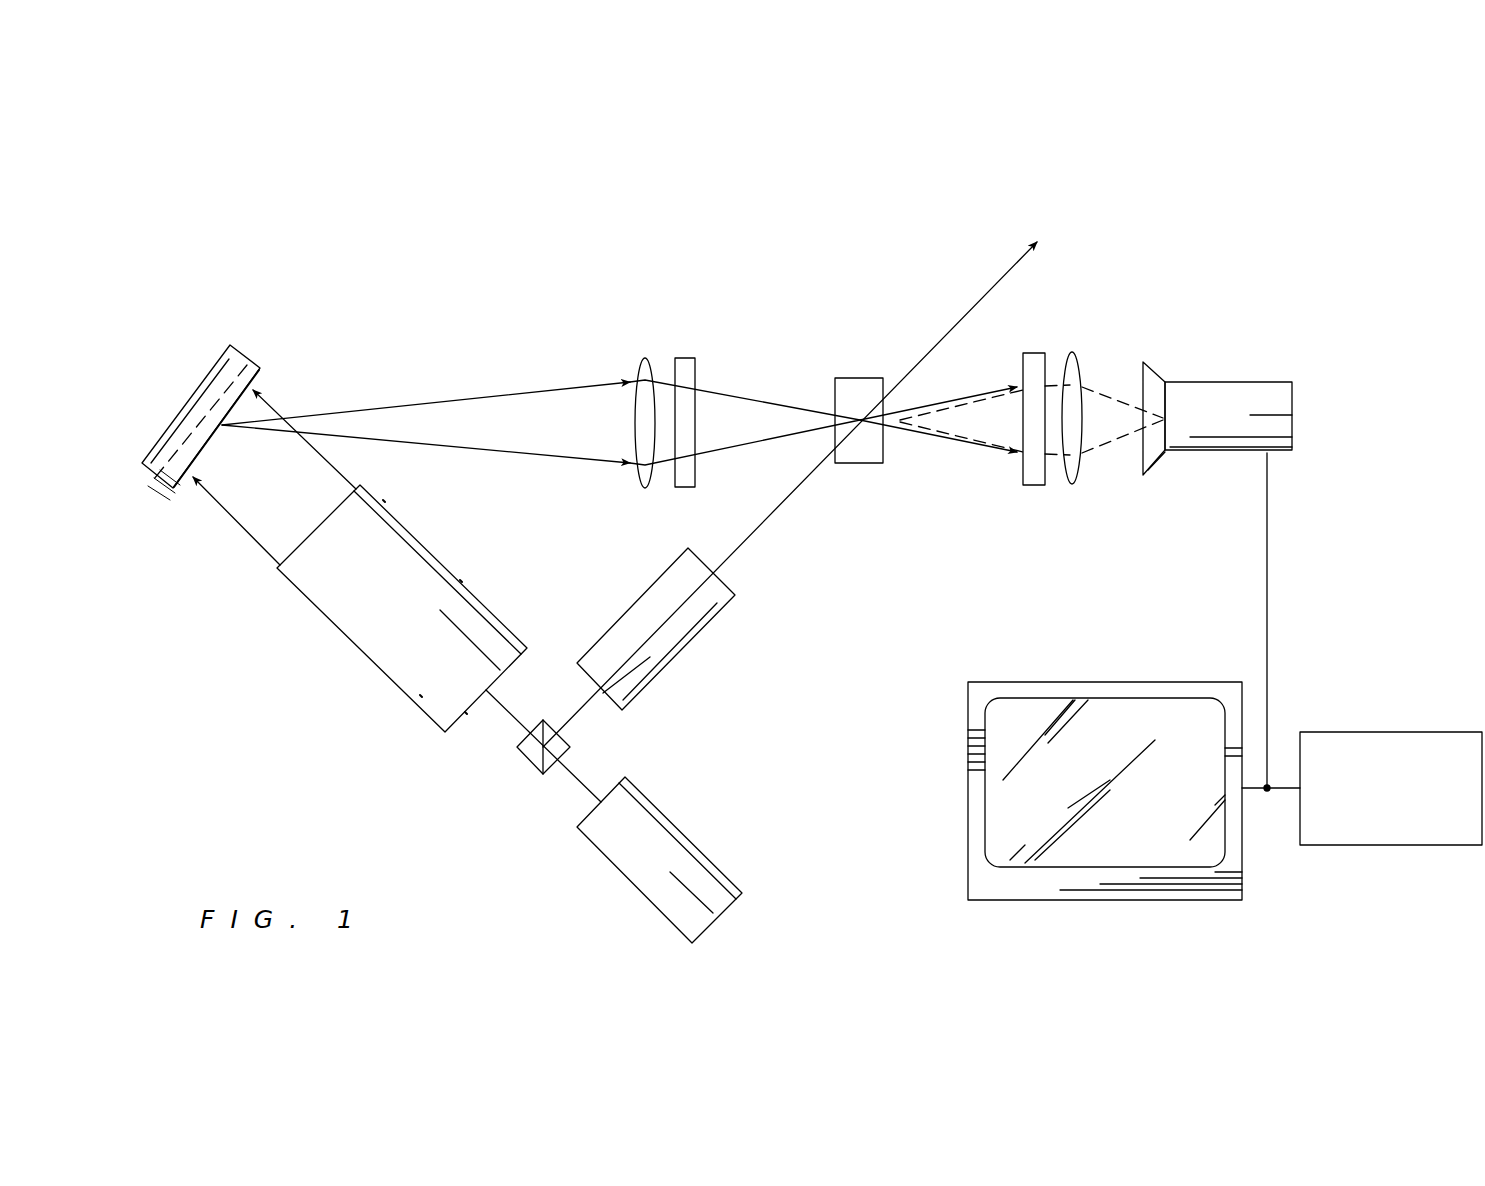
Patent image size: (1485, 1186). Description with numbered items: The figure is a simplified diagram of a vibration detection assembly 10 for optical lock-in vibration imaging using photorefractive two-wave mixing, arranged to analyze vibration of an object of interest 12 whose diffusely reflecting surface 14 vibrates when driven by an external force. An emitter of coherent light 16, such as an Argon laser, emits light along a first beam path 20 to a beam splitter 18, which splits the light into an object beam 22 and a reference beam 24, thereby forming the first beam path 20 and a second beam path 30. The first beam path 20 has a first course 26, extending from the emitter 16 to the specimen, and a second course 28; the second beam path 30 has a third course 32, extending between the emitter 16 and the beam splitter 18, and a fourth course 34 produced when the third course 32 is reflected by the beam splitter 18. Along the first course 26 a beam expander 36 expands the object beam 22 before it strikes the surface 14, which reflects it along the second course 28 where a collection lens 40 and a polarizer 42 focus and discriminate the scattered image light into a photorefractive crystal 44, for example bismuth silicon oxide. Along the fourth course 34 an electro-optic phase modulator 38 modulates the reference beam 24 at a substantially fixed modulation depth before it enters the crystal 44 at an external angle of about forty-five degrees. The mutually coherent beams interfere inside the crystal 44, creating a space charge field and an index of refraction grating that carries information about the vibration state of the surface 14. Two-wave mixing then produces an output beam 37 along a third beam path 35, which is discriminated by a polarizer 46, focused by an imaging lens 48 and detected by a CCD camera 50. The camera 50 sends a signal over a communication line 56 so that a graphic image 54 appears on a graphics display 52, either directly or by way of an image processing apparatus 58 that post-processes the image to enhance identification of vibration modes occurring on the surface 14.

The vibration detection assembly 10 is at (1185, 235).
The object of interest 12 is at (243, 352).
The surface 14 is at (207, 447).
The emitter of coherent light 16 is at (637, 860).
The beam splitter 18 is at (527, 757).
The first beam path 20 is at (400, 382).
The object beam 22 is at (487, 723).
The reference beam 24 is at (752, 508).
The first course 26 is at (507, 710).
The second course 28 is at (490, 392).
The second beam path 30 is at (583, 768).
The third course 32 is at (593, 790).
The fourth course 34 is at (732, 555).
The third beam path 35 is at (1012, 377).
The beam expander 36 is at (362, 600).
The output beam 37 is at (1012, 467).
The electro-optic phase modulator 38 is at (643, 617).
The collection lens 40 is at (640, 485).
The polarizer 42 is at (697, 368).
The photorefractive crystal 44 is at (872, 463).
The polarizer 46 is at (1033, 353).
The imaging lens 48 is at (1080, 472).
The CCD camera 50 is at (1205, 408).
The graphics display 52 is at (1017, 885).
The graphic image 54 is at (1113, 733).
The communication line 56 is at (1269, 557).
The image processing apparatus 58 is at (1363, 845).